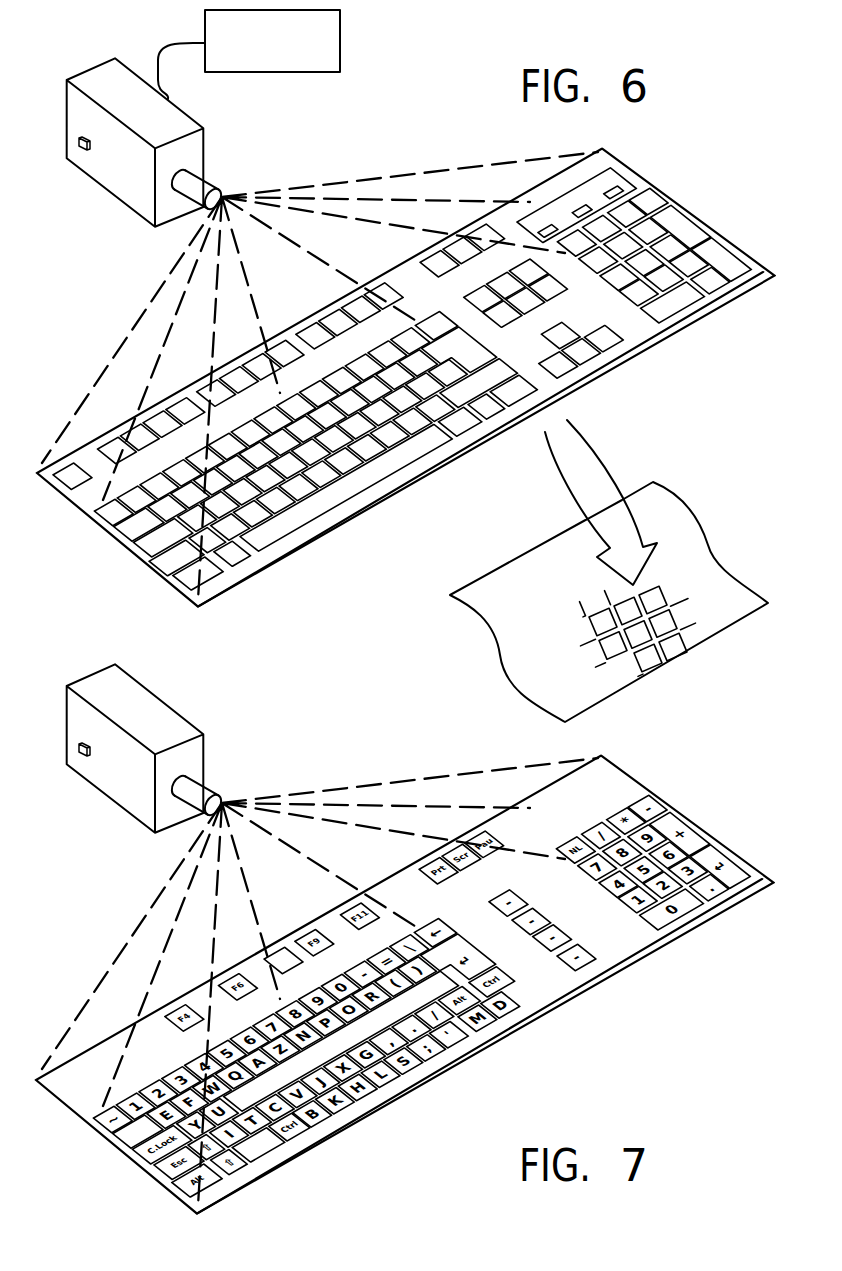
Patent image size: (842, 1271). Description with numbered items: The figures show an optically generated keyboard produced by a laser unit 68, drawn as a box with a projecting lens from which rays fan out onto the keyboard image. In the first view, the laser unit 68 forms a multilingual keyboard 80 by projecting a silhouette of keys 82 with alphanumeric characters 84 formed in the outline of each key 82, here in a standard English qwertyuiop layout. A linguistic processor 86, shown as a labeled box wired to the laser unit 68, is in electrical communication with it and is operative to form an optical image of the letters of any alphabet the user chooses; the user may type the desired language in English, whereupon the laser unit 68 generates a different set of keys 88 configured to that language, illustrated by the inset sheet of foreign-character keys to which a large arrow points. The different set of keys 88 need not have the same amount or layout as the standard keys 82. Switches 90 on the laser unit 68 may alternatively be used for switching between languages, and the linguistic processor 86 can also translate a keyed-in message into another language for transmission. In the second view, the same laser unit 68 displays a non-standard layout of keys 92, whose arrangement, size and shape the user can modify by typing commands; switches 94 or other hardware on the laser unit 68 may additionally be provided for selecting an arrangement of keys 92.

In FIG. 6, the laser unit 68 is at (90, 67).
In FIG. 7, the laser unit 68 is at (90, 676).
In FIG. 6, the multilingual keyboard 80 is at (516, 419).
In FIG. 6, the keys 82 is at (422, 272).
In FIG. 6, the alphanumeric characters 84 is at (318, 334).
In FIG. 6, the linguistic processor 86 is at (340, 32).
In FIG. 6, the different set of keys 88 is at (680, 650).
In FIG. 6, the switches 90 is at (67, 158).
In FIG. 7, the keys 92 is at (320, 944).
In FIG. 7, the switches 94 is at (67, 765).